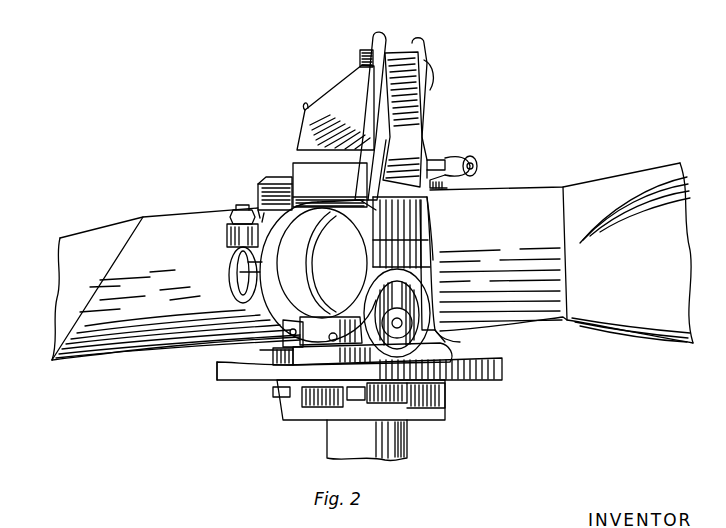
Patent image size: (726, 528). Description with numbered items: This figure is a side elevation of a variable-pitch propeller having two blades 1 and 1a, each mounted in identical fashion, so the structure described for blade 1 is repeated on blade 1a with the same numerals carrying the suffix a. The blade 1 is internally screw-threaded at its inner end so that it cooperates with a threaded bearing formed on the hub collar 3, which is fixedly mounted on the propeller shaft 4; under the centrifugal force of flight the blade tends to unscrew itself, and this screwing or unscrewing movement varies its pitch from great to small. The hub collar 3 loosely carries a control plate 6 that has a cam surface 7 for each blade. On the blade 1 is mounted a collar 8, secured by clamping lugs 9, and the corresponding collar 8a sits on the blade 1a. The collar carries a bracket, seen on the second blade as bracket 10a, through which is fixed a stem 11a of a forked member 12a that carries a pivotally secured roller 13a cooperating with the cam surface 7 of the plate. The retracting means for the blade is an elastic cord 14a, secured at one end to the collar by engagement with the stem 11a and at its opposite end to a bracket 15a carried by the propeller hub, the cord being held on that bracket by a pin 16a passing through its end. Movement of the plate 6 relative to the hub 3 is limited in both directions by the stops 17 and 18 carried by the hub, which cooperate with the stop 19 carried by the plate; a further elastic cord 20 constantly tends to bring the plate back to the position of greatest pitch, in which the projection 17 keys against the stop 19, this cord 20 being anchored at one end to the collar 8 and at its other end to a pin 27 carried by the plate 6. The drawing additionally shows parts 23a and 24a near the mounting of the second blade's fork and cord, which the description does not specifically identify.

The propeller blade 1 is at (90, 237).
The propeller blade 1a is at (618, 184).
The hub collar 3 is at (310, 233).
The propeller shaft 4 is at (403, 446).
The control plate 6 is at (482, 380).
The cam surface 7 is at (283, 398).
The collar 8 is at (258, 203).
The collar 8a is at (447, 200).
The clamping lugs 9 is at (227, 240).
The bracket 10a is at (427, 228).
The stem 11a is at (447, 187).
The forked member 12a is at (410, 300).
The roller 13a is at (430, 325).
The elastic cord 14a is at (400, 120).
The bracket 15a is at (348, 103).
The pin 16a is at (357, 83).
The stop 17 is at (437, 388).
The stop 18 is at (280, 395).
The stop 19 is at (355, 403).
The elastic cord 20 is at (270, 356).
The pin head 23a is at (462, 170).
The pivot pin 24a is at (443, 157).
The pin 27 is at (277, 387).